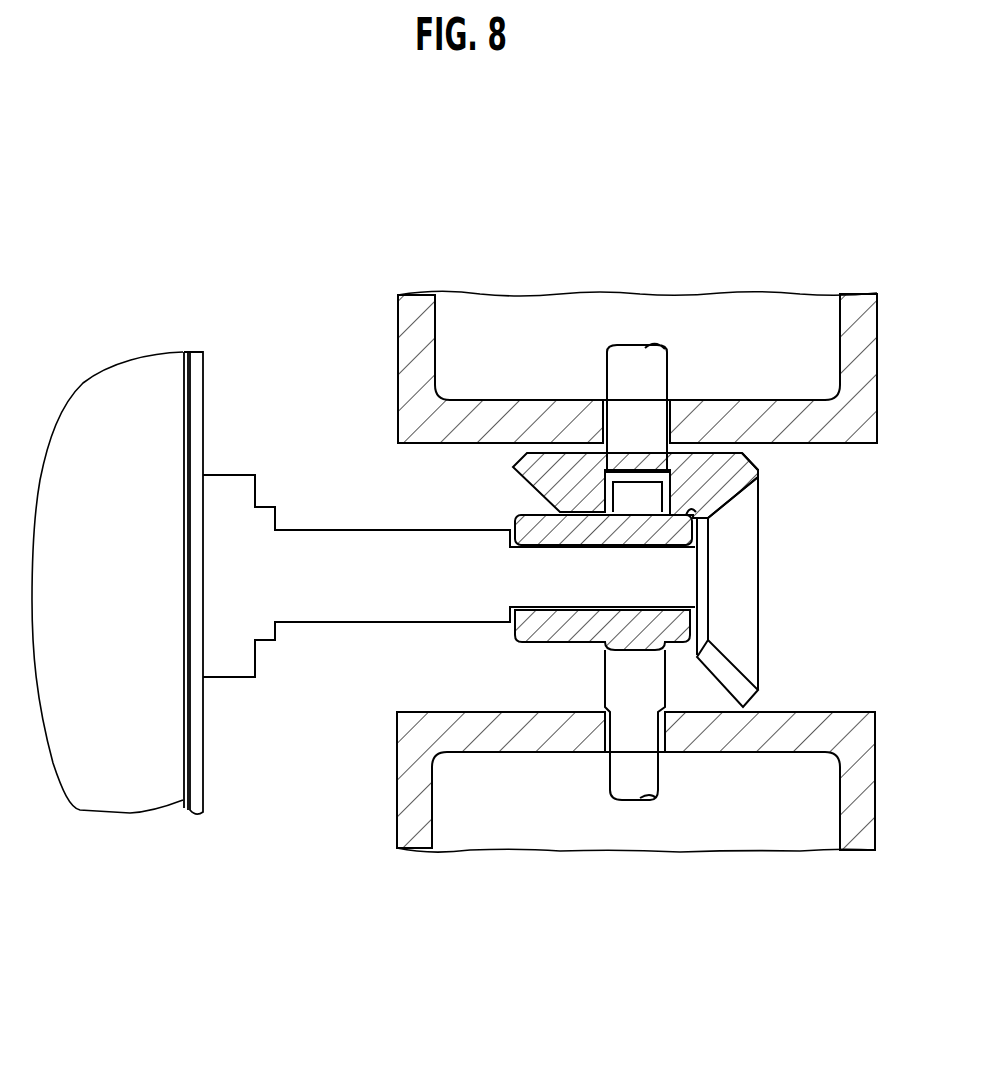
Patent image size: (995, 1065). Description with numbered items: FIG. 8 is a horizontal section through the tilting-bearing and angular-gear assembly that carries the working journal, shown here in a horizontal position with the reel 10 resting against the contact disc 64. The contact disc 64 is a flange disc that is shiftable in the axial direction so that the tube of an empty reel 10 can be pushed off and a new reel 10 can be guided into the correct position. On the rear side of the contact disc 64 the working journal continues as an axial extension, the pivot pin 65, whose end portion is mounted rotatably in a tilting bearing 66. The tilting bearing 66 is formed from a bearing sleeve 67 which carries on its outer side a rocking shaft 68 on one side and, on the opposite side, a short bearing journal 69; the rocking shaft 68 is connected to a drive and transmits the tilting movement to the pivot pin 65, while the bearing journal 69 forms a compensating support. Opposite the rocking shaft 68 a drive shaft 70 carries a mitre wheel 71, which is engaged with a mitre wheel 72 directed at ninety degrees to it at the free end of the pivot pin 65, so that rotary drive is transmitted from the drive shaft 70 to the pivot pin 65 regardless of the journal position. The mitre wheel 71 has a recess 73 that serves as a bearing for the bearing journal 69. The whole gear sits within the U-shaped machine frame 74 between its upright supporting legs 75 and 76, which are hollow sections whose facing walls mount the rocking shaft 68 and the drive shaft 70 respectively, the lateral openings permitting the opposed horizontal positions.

The reel 10 is at (132, 335).
The contact disc 64 is at (200, 418).
The pivot pin 65 is at (318, 605).
The tilting bearing 66 is at (583, 492).
The bearing sleeve 67 is at (660, 625).
The rocking shaft 68 is at (627, 773).
The bearing journal 69 is at (650, 493).
The drive shaft 70 is at (657, 368).
The mitre wheel 71 is at (572, 470).
The mitre wheel 72 is at (740, 548).
The recess 73 is at (705, 458).
The machine frame 74 is at (582, 543).
The supporting leg 75 is at (355, 360).
The supporting leg 76 is at (403, 857).